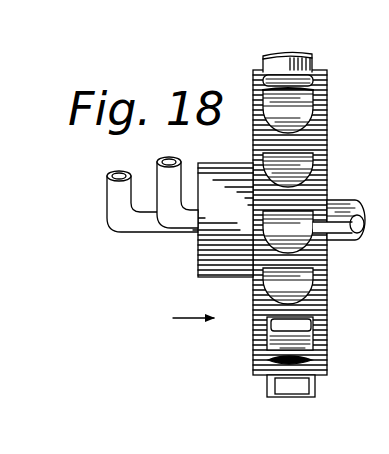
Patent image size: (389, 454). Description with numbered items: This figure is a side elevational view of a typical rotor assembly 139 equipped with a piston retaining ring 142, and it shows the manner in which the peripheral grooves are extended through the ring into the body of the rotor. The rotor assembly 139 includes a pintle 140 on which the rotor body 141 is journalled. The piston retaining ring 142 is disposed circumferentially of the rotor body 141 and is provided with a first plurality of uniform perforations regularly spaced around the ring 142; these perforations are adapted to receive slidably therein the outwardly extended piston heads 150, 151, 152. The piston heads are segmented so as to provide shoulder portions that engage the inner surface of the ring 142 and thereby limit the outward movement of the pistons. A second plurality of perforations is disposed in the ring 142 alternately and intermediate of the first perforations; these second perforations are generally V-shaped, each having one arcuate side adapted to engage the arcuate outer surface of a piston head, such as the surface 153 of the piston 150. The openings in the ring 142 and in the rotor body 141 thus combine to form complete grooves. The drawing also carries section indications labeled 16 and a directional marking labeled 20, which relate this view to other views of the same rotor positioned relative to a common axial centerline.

The section line 16- 16 is at (288, 30).
The flow direction arrow 20 is at (178, 321).
The rotor assembly 139 is at (147, 258).
The pintle 140 is at (215, 252).
The rotor body 141 is at (330, 162).
The piston retaining ring 142 is at (322, 70).
The piston head 150 is at (316, 103).
The piston head 151 is at (318, 243).
The piston head 152 is at (318, 332).
The arcuate outer surface of piston head 153 is at (326, 120).